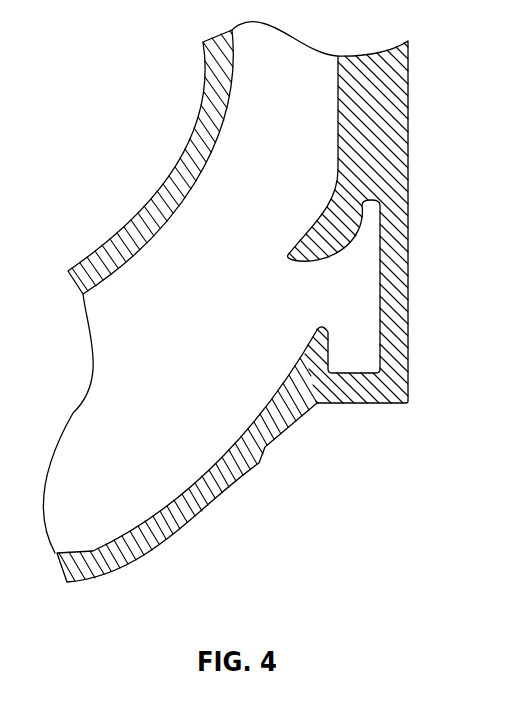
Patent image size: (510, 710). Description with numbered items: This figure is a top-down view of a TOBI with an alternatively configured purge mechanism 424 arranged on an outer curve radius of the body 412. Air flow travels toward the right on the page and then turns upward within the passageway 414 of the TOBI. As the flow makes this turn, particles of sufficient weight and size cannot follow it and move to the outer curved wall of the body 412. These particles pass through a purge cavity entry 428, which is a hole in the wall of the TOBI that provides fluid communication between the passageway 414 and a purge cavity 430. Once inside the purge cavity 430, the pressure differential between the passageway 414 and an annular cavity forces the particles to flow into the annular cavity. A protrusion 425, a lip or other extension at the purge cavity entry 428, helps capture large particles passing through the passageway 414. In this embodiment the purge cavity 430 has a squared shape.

The body 412 is at (156, 212).
The passageway 414 is at (107, 365).
The purge mechanism 424 is at (410, 262).
The protrusion 425 is at (322, 236).
The purge cavity entry 428 is at (299, 296).
The purge cavity 430 is at (361, 354).